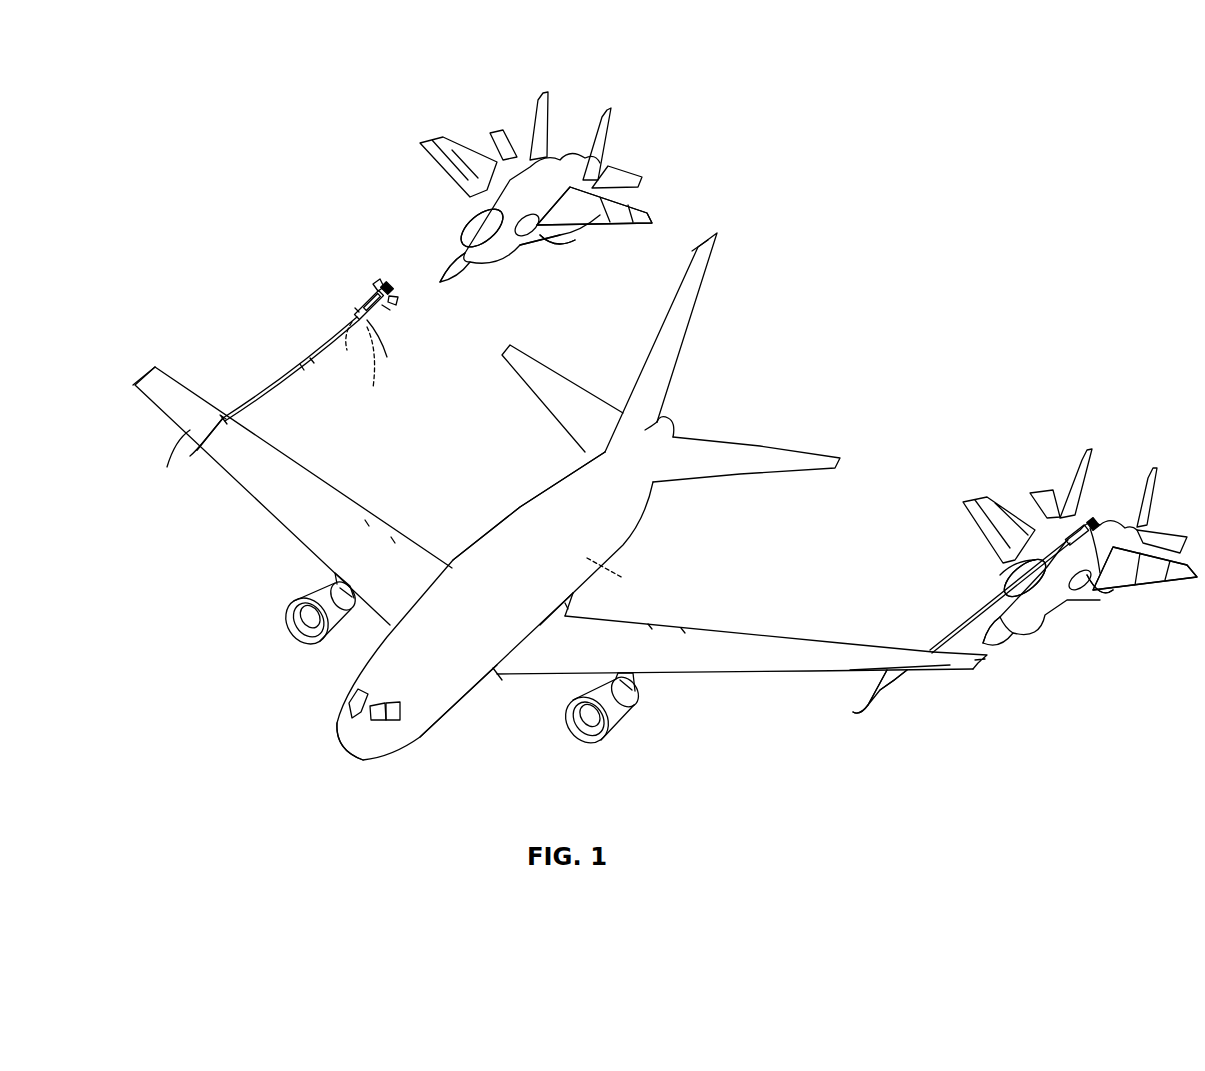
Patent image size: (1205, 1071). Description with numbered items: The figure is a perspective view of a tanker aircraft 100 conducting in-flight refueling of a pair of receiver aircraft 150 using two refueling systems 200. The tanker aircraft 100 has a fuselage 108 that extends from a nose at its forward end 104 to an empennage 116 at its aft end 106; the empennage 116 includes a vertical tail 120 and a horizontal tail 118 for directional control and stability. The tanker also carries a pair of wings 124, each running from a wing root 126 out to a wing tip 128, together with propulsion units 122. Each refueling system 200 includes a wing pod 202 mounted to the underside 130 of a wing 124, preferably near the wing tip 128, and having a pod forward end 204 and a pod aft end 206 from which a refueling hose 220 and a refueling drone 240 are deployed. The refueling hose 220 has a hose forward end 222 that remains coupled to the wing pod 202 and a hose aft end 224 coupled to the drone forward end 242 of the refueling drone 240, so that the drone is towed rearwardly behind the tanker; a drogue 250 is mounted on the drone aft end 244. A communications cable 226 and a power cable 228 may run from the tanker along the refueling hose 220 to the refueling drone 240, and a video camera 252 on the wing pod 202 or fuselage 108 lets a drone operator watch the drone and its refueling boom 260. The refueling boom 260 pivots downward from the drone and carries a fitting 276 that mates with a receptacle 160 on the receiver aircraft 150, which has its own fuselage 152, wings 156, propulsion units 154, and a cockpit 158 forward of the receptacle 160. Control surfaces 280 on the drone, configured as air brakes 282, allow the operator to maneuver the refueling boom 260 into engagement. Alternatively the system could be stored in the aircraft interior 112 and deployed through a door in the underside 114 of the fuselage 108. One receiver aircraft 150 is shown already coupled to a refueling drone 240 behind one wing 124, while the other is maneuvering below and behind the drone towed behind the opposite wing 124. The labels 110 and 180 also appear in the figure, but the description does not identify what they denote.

The tanker aircraft 100 is at (337, 724).
The forward end 104 is at (353, 761).
The aft end 106 is at (675, 425).
The fuselage 108 is at (446, 710).
The fuselage top 110 is at (490, 540).
The aircraft interior 112 is at (624, 572).
The underside 114 is at (648, 502).
The empennage 116 is at (667, 418).
The horizontal tail 118 is at (553, 405).
The vertical tail 120 is at (662, 338).
The propulsion units 122 is at (295, 644).
The wings 124 is at (285, 506).
The wing root 126 is at (493, 678).
The wing tip 128 is at (147, 373).
The underside of the wing 130 is at (849, 673).
The receiver aircraft 150 is at (420, 145).
The fuselage 152 is at (480, 254).
The propulsion units 154 is at (527, 244).
The wings 156 is at (655, 213).
The cockpit 158 is at (462, 233).
The receptacle 160 is at (550, 228).
The second receiver aircraft 180 is at (962, 511).
The refueling system 200 is at (167, 463).
The wing pod 202 is at (203, 441).
The pod forward end 204 is at (175, 461).
The pod aft end 206 is at (908, 671).
The refueling hose 220 is at (251, 402).
The hose forward end 222 is at (228, 421).
The hose aft end 224 is at (352, 316).
The communications cable 226 is at (312, 361).
The power cable 228 is at (302, 368).
The refueling drone 240 is at (372, 300).
The drone forward end 242 is at (343, 347).
The drone aft end 244 is at (383, 306).
The drogue 250 is at (385, 288).
The video camera 252 is at (220, 415).
The refueling boom 260 is at (391, 348).
The fitting 276 is at (372, 367).
The control surfaces 280 is at (378, 287).
The air brakes 282 is at (394, 298).